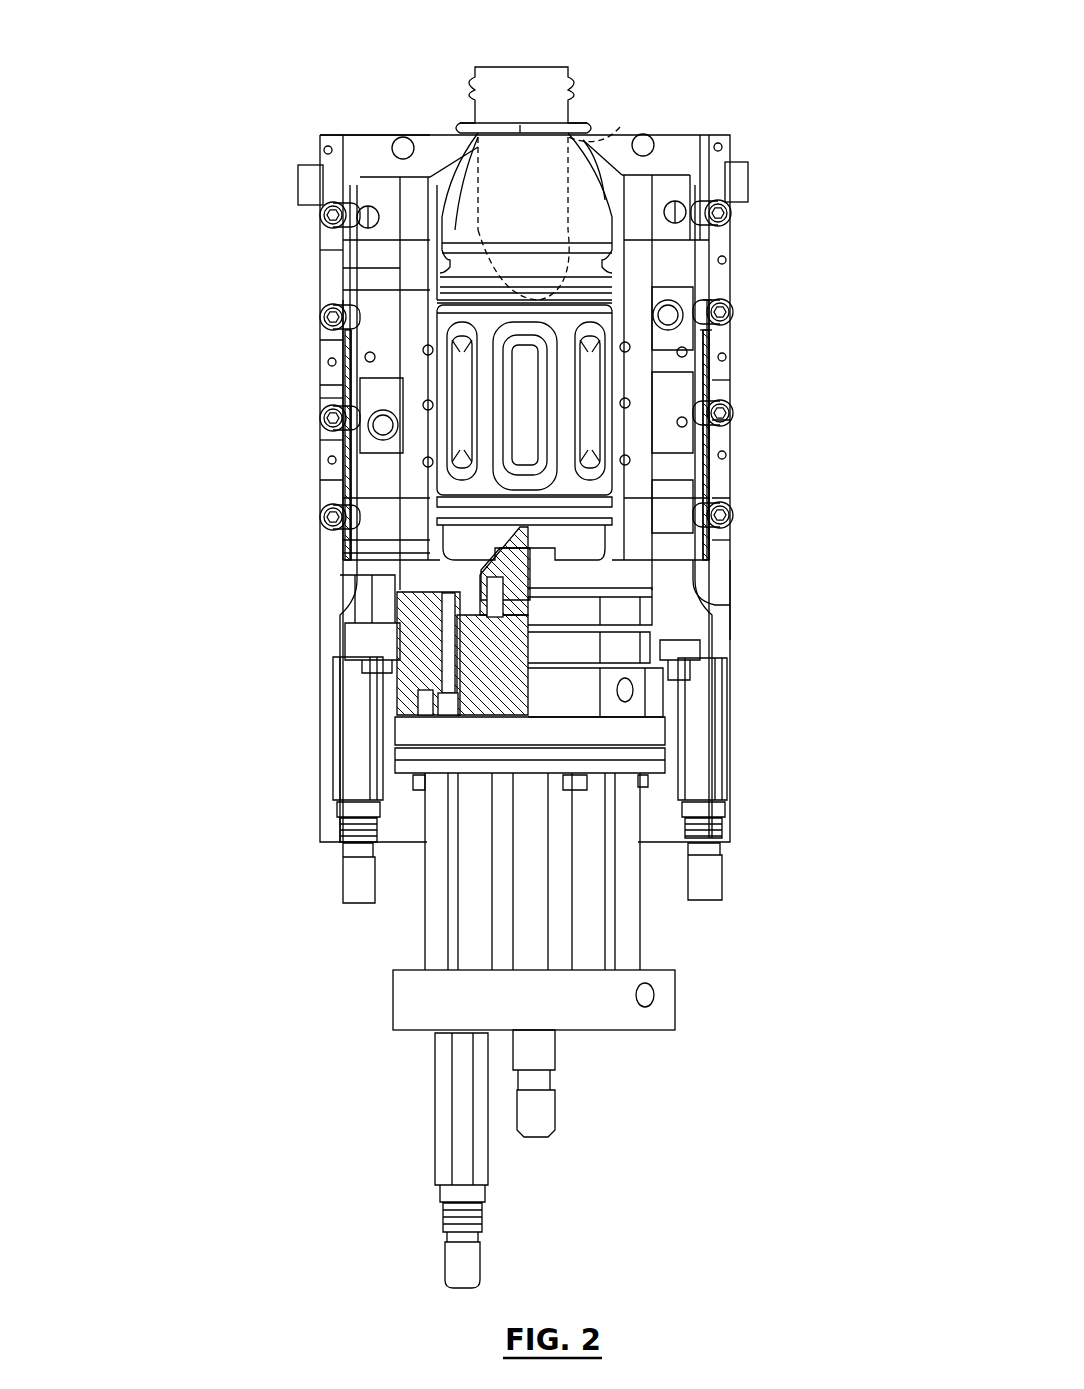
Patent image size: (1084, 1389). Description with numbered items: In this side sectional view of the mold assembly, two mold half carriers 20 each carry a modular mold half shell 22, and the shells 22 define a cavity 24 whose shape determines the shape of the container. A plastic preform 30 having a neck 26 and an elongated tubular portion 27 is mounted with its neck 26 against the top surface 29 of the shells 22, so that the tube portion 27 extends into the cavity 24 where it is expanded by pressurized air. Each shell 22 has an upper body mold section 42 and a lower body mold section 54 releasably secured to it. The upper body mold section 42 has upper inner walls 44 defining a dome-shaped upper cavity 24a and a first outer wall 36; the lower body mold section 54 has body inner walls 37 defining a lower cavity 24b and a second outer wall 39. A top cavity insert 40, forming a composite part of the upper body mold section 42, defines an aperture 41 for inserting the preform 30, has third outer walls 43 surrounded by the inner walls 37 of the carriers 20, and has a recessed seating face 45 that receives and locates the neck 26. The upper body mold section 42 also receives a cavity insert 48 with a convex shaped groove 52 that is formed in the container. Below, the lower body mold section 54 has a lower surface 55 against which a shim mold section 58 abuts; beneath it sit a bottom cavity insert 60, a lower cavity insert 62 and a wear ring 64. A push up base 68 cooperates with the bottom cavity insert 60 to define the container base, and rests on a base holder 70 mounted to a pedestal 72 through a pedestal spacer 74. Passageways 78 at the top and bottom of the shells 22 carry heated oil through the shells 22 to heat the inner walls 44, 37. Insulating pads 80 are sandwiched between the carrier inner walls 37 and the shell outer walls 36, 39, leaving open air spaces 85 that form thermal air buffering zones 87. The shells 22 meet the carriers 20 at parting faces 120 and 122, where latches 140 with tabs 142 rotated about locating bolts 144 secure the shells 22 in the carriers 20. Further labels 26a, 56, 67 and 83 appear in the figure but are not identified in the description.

The mold half carrier 20 is at (743, 133).
The modular mold half shell 22 is at (405, 115).
The cavity 24 is at (733, 282).
The upper cavity 24a is at (593, 213).
The lower cavity 24b is at (610, 493).
The neck 26 is at (580, 100).
The neck finish 26a is at (463, 125).
The elongated tubular portion 27 is at (620, 127).
The top surface 29 is at (370, 133).
The plastic preform 30 is at (578, 55).
The first outer wall 36 is at (345, 133).
The inner wall 37 is at (320, 150).
The second outer wall 39 is at (318, 400).
The top cavity insert 40 is at (685, 137).
The aperture 41 is at (540, 127).
The upper body mold section 42 is at (210, 257).
The third outer wall 43 is at (300, 185).
The upper inner wall 44 is at (470, 210).
The seating face 45 is at (600, 130).
The cavity insert 48 is at (418, 250).
The convex shaped groove 52 is at (478, 250).
The lower body mold section 54 is at (318, 450).
The lower surface 55 is at (728, 482).
The base plate 56 is at (340, 543).
The shim mold section 58 is at (680, 527).
The bottom cavity insert 60 is at (740, 560).
The lower cavity insert 62 is at (372, 590).
The wear ring 64 is at (673, 637).
The guide rod 67 is at (373, 675).
The push up base 68 is at (640, 578).
The base holder 70 is at (677, 798).
The pedestal 72 is at (657, 730).
The pedestal spacer 74 is at (657, 758).
The passageway 78 is at (340, 885).
The insulating pad 80 is at (733, 340).
The mold shell 83 is at (733, 422).
The open air space 85 is at (730, 400).
The thermal air buffering zone 87 is at (320, 385).
The parting face 120 is at (728, 365).
The parting face 122 is at (727, 338).
The latch 140 is at (727, 385).
The tab 142 is at (727, 420).
The locating bolt 144 is at (735, 548).